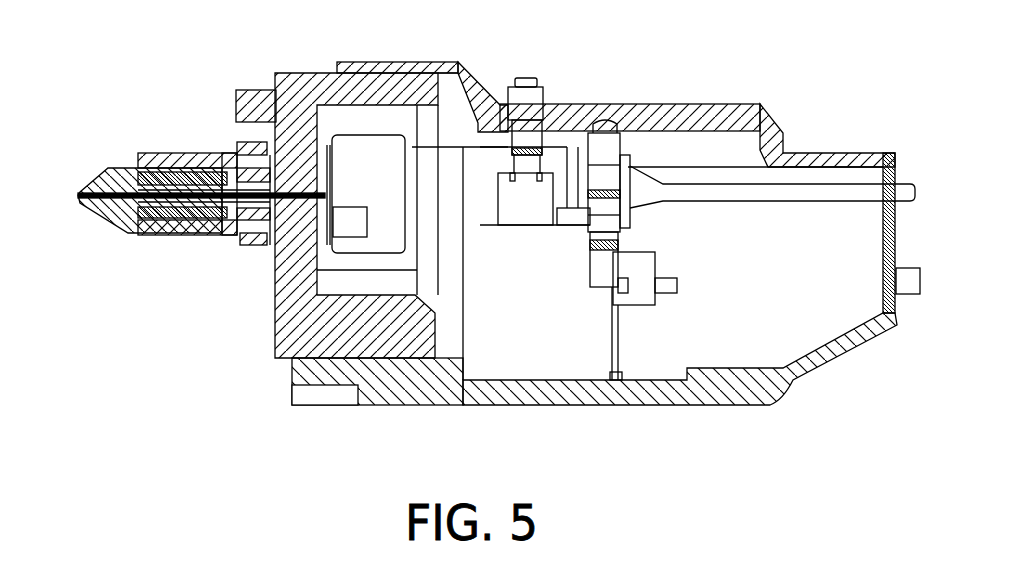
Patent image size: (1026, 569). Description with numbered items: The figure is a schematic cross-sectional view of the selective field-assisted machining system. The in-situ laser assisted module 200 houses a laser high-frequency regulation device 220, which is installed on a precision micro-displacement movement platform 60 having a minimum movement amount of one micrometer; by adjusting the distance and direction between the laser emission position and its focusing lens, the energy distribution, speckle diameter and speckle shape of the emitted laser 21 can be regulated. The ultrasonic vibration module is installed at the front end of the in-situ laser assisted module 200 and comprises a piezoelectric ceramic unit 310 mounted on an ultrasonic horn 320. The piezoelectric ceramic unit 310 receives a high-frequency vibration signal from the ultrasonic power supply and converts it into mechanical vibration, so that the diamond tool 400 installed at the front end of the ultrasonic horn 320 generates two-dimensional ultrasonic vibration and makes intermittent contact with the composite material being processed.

The laser 21 is at (506, 236).
The precision micro-displacement movement platform 60 is at (594, 381).
The in-situ laser assisted module 200 is at (775, 301).
The laser high-frequency regulation device 220 is at (454, 132).
The piezoelectric ceramic unit 310 is at (174, 142).
The ultrasonic horn 320 is at (146, 268).
The diamond tool 400 is at (170, 144).